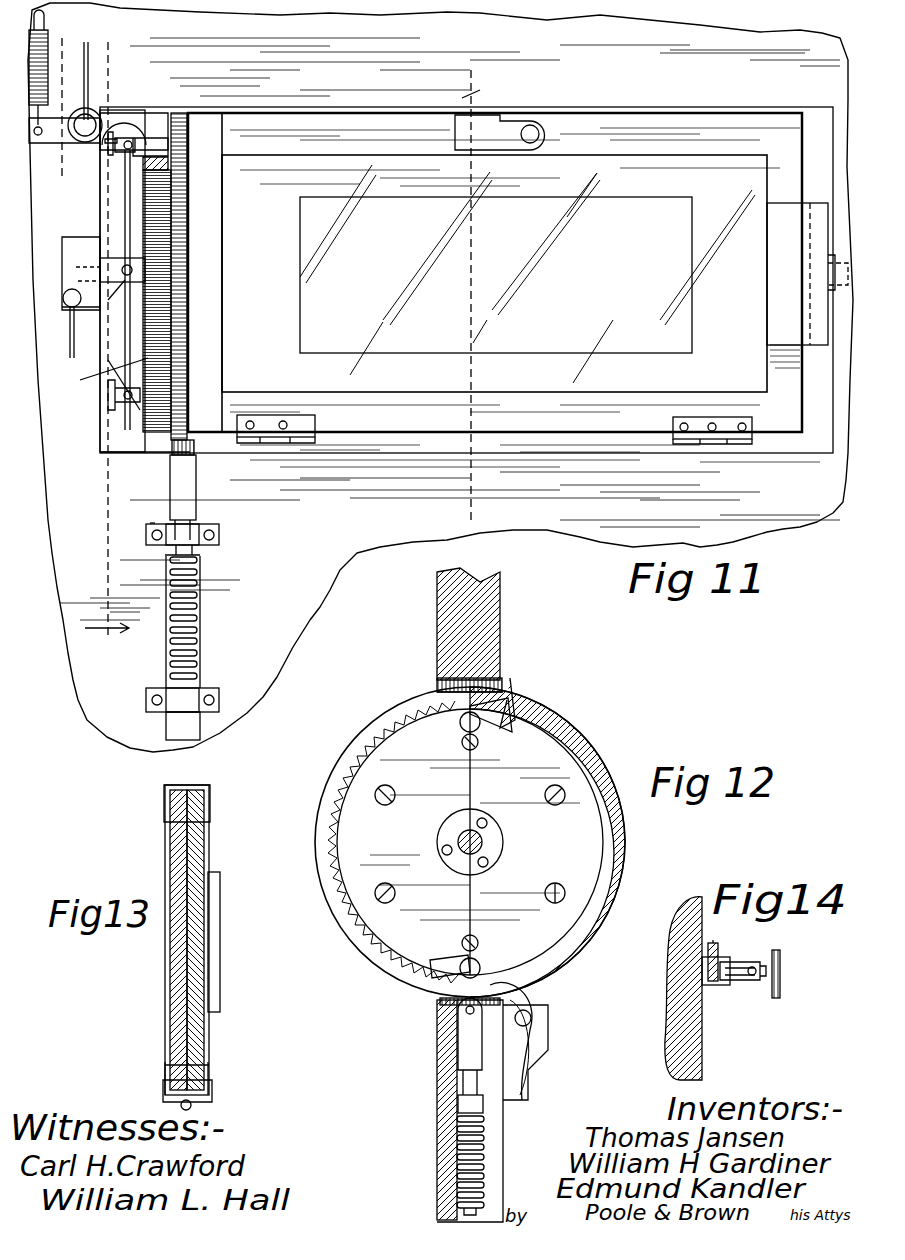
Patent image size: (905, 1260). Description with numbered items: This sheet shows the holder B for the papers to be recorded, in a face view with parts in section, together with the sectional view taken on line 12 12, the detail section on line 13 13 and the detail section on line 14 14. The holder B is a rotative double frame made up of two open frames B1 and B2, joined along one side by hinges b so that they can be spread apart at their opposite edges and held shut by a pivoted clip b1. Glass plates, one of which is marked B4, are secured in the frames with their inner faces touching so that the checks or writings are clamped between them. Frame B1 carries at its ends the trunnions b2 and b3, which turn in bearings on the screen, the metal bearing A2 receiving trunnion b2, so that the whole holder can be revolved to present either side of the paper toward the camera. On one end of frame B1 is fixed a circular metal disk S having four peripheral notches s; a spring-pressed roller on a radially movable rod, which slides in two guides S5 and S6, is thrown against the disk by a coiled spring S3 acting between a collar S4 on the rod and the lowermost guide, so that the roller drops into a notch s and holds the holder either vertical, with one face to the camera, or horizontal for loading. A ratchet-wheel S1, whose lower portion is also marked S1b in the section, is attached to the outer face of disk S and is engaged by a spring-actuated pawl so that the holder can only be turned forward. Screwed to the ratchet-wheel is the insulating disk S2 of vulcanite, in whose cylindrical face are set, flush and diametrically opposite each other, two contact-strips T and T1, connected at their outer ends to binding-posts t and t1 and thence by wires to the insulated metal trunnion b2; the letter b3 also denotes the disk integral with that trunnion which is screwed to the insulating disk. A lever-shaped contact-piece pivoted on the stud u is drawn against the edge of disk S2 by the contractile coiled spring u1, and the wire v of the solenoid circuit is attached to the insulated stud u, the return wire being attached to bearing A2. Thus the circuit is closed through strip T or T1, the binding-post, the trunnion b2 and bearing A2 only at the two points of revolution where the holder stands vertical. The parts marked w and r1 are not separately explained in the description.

In FIG. 11, the holding device B is at (466, 287).
In FIG. 12, the holding device B is at (493, 858).
In FIG. 13, the holding device B is at (224, 953).
In FIG. 11, the open frame B1 is at (527, 291).
In FIG. 13, the open frame B1 is at (168, 1050).
In FIG. 13, the open frame B2 is at (210, 1058).
In FIG. 13, the glass plate B4 is at (208, 838).
In FIG. 11, the hinges b is at (306, 443).
In FIG. 13, the hinges b is at (212, 1102).
In FIG. 11, the pivoted clip b1 is at (500, 132).
In FIG. 13, the pivoted clip b1 is at (208, 785).
In FIG. 11, the trunnion b2 is at (112, 307).
In FIG. 12, the trunnion b2 is at (485, 838).
In FIG. 11, the trunnion b3 is at (827, 283).
In FIG. 12, the trunnion b3 is at (495, 850).
In FIG. 11, the disk S is at (160, 210).
In FIG. 12, the disk S is at (612, 750).
In FIG. 12, the peripheral notches s is at (495, 672).
In FIG. 11, the ratchet-wheel S1 is at (170, 335).
In FIG. 12, the ratchet-wheel S1 is at (585, 735).
In FIG. 12, the slide housing S1b is at (437, 1005).
In FIG. 11, the insulating disk S2 is at (215, 503).
In FIG. 12, the insulating disk S2 is at (432, 1078).
In FIG. 11, the coiled spring S3 is at (199, 582).
In FIG. 12, the coiled spring S3 is at (456, 1135).
In FIG. 11, the collar S4 is at (200, 552).
In FIG. 12, the collar S4 is at (456, 1100).
In FIG. 11, the guide or bearing S5 is at (219, 533).
In FIG. 12, the guide or bearing S5 is at (522, 1100).
In FIG. 11, the lower bracket S6 is at (219, 697).
In FIG. 11, the contact-strip T is at (135, 148).
In FIG. 12, the contact-strip T is at (500, 725).
In FIG. 11, the contact-strip T1 is at (140, 405).
In FIG. 12, the contact-strip T1 is at (440, 950).
In FIG. 11, the binding-post t is at (125, 140).
In FIG. 12, the binding-post t is at (465, 728).
In FIG. 11, the binding-post t1 is at (112, 395).
In FIG. 12, the binding-post t1 is at (483, 962).
In FIG. 11, the stud u is at (95, 120).
In FIG. 14, the stud u is at (718, 982).
In FIG. 11, the contractile coiled spring u1 is at (50, 65).
In FIG. 11, the wire v is at (92, 60).
In FIG. 14, the wire v is at (717, 942).
In FIG. 11, the pin w is at (107, 111).
In FIG. 11, the metal bearing A2 is at (103, 273).
In FIG. 11, the roller r1 is at (70, 335).
In FIG. 11, the section line 12 is at (111, 339).
In FIG. 11, the section line 13 is at (469, 282).
In FIG. 11, the section line 14 is at (64, 104).